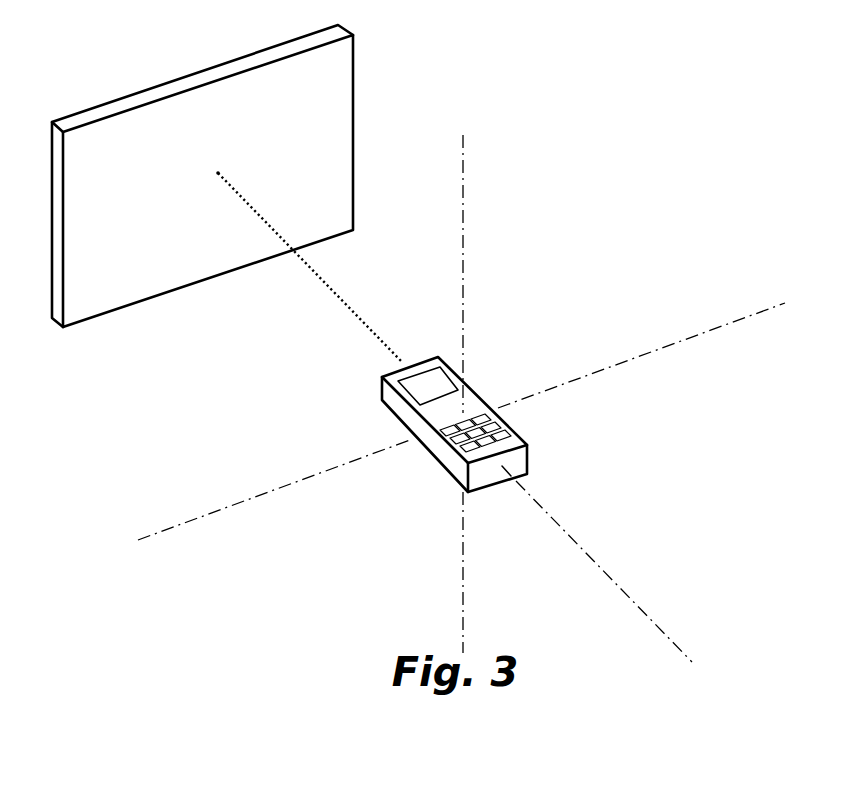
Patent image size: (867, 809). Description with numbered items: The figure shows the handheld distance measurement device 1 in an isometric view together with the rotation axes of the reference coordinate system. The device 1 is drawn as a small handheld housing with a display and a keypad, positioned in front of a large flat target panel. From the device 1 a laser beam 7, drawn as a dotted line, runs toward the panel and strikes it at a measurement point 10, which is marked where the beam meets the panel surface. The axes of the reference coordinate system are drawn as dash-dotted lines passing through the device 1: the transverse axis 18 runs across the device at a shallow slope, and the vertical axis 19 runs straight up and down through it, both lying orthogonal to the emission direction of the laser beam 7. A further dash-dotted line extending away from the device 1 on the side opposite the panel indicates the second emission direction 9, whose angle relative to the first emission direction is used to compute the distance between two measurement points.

The handheld distance measurement device 1 is at (487, 381).
The laser beam 7 is at (292, 268).
The second emission direction 9 is at (597, 564).
The measurement point 10 is at (231, 176).
The transverse axis 18 is at (461, 421).
The vertical axis 19 is at (413, 394).